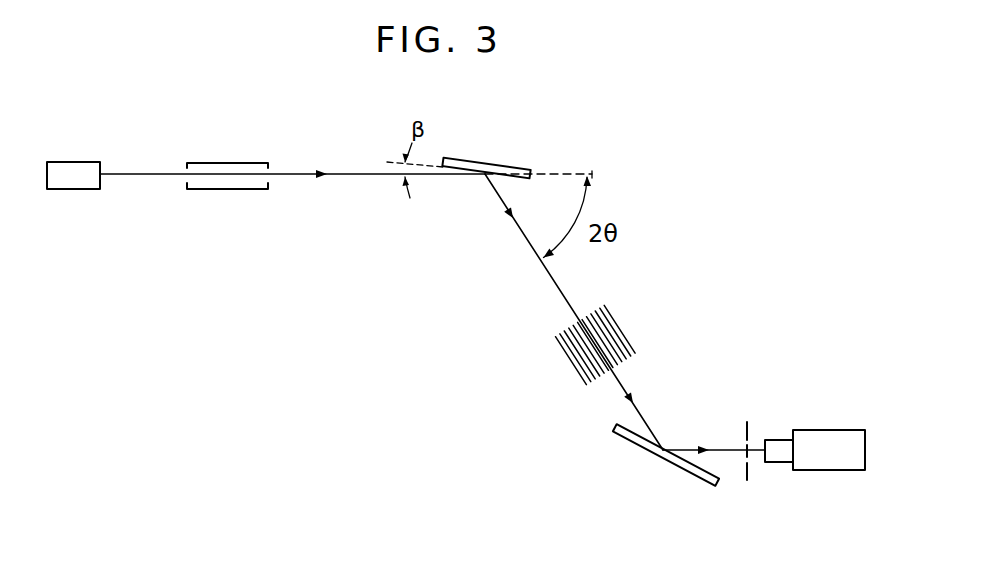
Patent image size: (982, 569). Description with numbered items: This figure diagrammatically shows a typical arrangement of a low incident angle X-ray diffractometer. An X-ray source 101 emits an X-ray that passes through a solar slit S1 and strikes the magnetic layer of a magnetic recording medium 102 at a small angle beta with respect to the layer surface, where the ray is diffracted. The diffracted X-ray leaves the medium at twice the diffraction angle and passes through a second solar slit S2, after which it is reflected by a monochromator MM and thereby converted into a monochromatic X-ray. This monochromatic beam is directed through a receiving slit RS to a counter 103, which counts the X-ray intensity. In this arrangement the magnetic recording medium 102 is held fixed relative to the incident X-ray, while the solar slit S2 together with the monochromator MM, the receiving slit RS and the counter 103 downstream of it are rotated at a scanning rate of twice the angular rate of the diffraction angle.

The X-ray source 101 is at (78, 161).
The solar slit S1 is at (237, 161).
The magnetic recording medium 102 is at (489, 158).
The solar slit S2 is at (608, 345).
The monochromator MM is at (656, 459).
The receiving slit RS is at (753, 471).
The counter 103 is at (823, 437).